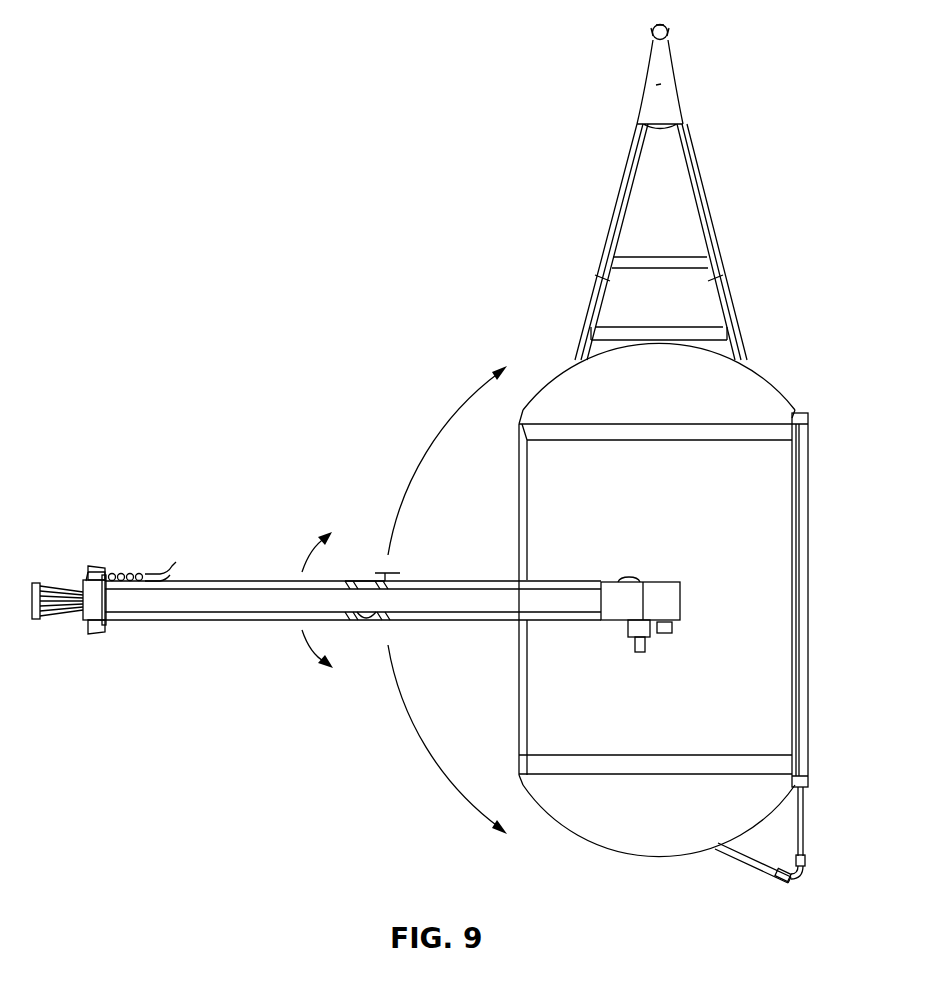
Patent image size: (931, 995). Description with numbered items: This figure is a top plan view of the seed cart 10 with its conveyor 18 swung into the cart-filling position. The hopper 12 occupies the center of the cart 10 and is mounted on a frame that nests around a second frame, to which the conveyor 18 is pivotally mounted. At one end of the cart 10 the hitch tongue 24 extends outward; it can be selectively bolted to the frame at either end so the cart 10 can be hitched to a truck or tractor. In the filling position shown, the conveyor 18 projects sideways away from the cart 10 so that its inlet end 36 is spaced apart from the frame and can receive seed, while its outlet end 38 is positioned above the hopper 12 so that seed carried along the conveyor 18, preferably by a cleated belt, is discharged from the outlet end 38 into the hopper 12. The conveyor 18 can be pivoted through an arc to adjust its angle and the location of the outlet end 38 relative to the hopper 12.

The seed cart 10 is at (150, 104).
The hopper 12 is at (767, 398).
The conveyor 18 is at (200, 581).
The hitch tongue 24 is at (712, 230).
The inlet end 36 is at (45, 583).
The outlet end 38 is at (670, 587).